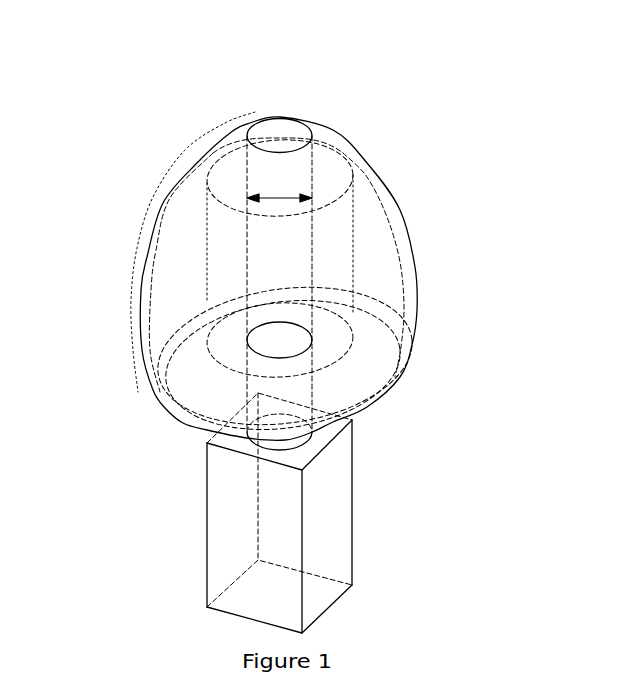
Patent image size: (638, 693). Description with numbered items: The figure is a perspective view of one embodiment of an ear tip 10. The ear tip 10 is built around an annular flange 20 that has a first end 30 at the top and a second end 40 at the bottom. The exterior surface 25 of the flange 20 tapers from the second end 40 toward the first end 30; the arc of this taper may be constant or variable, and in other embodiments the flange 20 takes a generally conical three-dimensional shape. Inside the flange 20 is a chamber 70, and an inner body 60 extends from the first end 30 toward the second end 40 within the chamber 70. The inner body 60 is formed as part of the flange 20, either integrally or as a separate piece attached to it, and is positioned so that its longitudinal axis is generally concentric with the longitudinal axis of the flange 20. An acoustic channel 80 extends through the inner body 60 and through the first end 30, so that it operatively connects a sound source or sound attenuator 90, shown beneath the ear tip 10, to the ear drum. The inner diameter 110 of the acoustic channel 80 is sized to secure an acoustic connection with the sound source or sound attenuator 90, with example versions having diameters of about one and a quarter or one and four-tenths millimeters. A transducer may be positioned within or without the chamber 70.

The ear tip 10 is at (398, 180).
The annular flange 20 is at (415, 312).
The exterior surface 25 is at (152, 208).
The first end 30 is at (230, 130).
The second end 40 is at (180, 425).
The inner body 60 is at (332, 253).
The chamber 70 is at (368, 280).
The acoustic channel 80 is at (283, 118).
The sound source or sound attenuator 90 is at (272, 537).
The inner diameter 110 is at (285, 193).